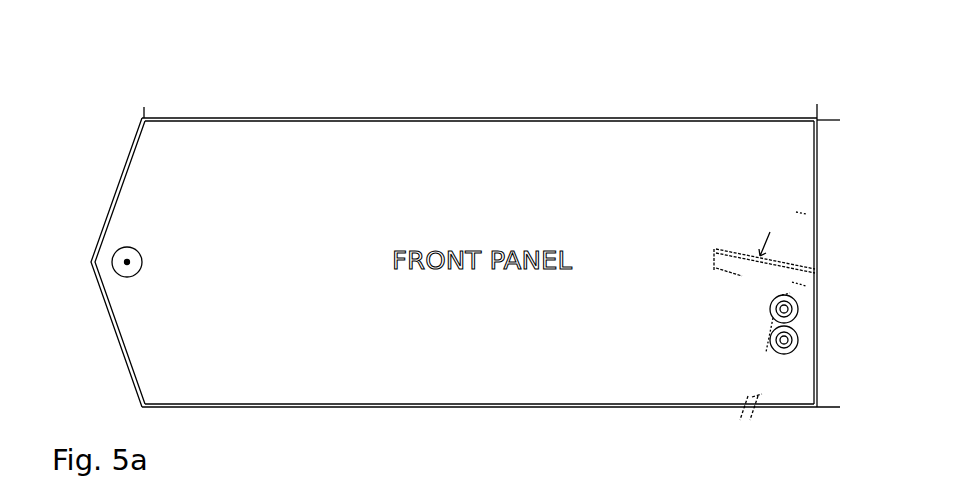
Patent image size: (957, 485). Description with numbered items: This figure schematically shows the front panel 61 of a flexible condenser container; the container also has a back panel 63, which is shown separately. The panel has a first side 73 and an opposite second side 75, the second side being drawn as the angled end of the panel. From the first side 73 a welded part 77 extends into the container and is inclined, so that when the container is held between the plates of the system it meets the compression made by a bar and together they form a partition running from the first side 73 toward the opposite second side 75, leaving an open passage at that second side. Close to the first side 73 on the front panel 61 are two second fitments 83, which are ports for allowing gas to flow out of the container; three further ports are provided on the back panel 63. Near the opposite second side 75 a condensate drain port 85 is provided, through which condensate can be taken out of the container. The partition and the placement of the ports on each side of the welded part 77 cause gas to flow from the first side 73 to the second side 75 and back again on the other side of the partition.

The front panel 61 is at (270, 118).
The back panel 63 is at (334, 484).
The first side 73 is at (812, 193).
The opposite second side 75 is at (103, 222).
The welded part 77 is at (773, 258).
The second fitment 83 is at (799, 312).
The condensate drain port 85 is at (135, 273).